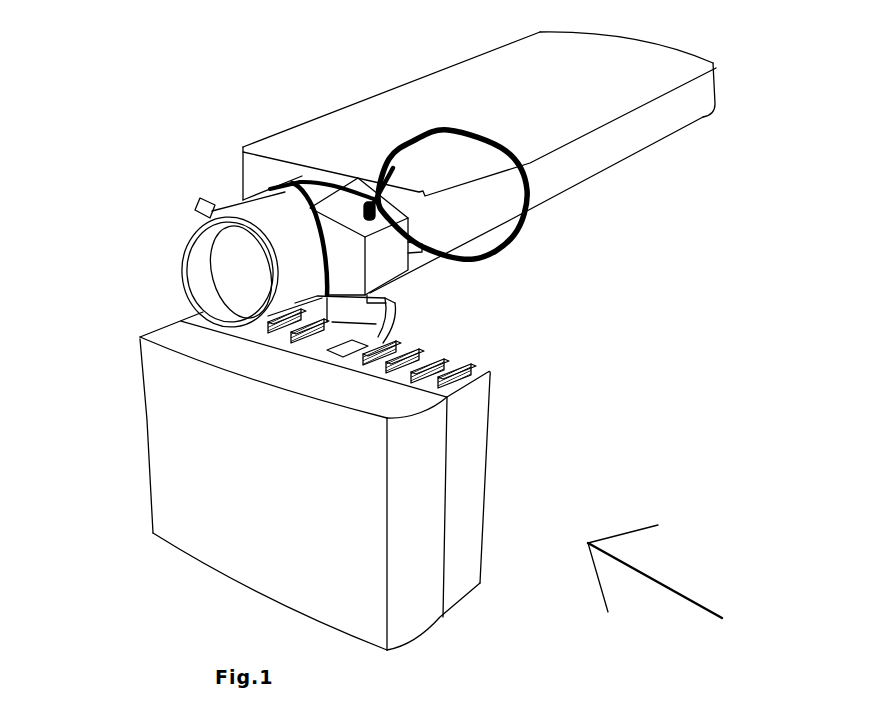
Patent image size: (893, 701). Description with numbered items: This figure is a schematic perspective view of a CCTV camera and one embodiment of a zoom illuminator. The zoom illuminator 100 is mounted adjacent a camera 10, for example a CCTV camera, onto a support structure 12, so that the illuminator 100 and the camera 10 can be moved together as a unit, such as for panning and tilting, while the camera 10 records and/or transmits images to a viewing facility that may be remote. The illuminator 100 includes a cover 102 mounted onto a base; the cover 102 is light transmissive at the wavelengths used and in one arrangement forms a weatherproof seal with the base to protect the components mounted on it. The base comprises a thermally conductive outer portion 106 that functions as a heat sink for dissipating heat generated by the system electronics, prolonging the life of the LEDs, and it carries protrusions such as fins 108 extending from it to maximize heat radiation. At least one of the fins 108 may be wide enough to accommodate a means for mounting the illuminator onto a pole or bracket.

The camera 10 is at (398, 137).
The support structure 12 is at (392, 322).
The zoom illuminator 100 is at (667, 571).
The cover 102 is at (140, 395).
The thermally conductive outer portion 106 is at (460, 513).
The fins 108 is at (447, 352).